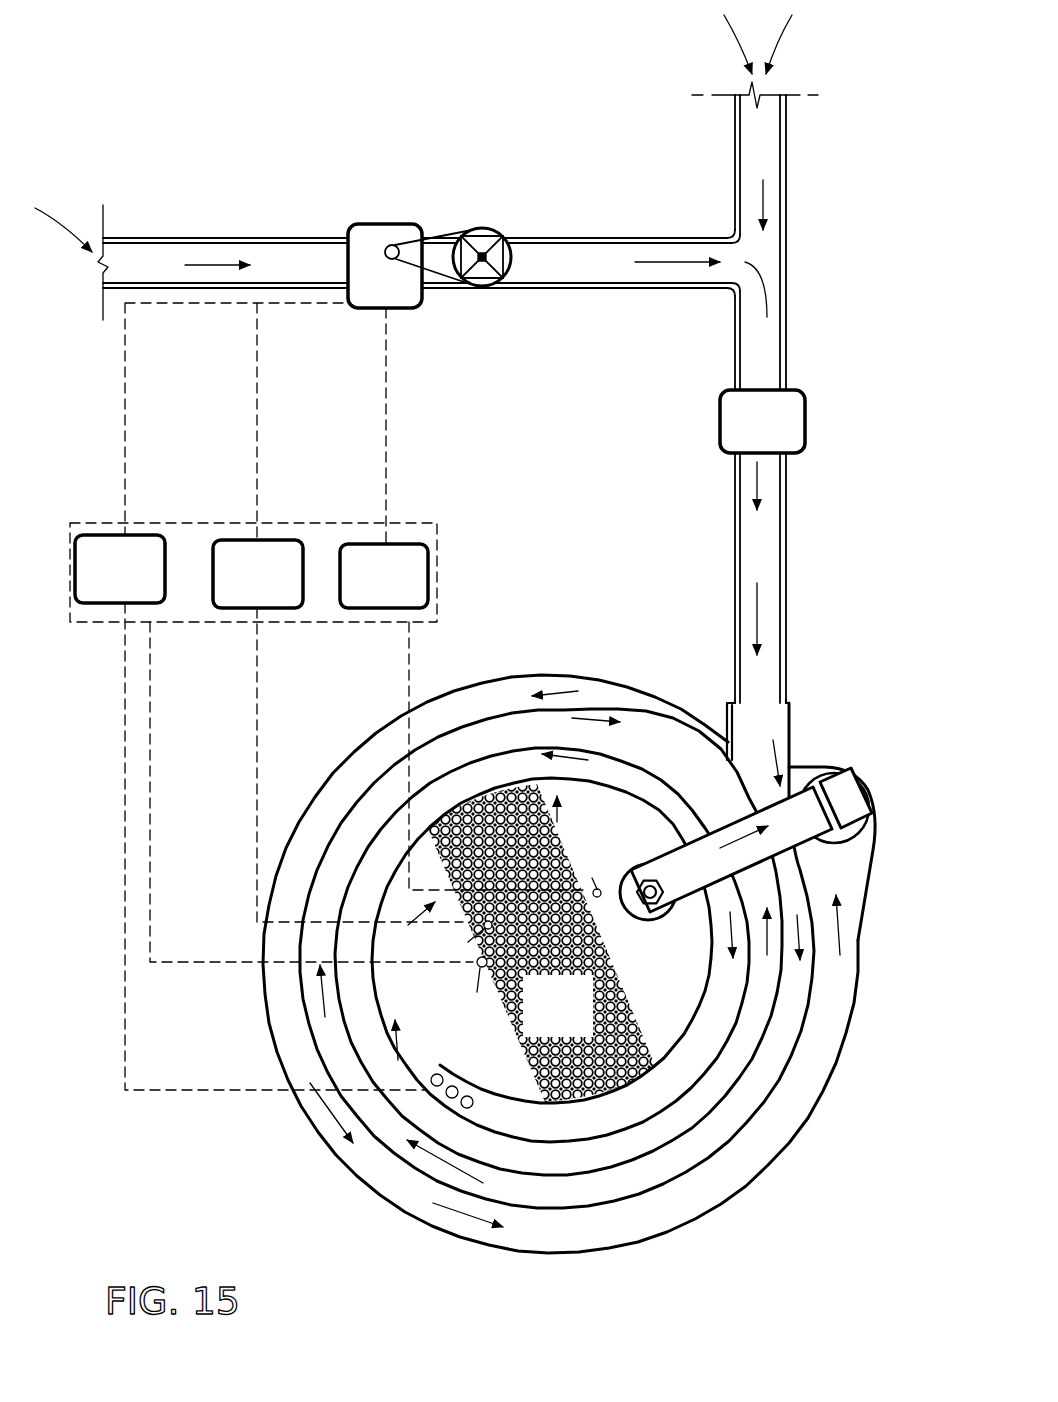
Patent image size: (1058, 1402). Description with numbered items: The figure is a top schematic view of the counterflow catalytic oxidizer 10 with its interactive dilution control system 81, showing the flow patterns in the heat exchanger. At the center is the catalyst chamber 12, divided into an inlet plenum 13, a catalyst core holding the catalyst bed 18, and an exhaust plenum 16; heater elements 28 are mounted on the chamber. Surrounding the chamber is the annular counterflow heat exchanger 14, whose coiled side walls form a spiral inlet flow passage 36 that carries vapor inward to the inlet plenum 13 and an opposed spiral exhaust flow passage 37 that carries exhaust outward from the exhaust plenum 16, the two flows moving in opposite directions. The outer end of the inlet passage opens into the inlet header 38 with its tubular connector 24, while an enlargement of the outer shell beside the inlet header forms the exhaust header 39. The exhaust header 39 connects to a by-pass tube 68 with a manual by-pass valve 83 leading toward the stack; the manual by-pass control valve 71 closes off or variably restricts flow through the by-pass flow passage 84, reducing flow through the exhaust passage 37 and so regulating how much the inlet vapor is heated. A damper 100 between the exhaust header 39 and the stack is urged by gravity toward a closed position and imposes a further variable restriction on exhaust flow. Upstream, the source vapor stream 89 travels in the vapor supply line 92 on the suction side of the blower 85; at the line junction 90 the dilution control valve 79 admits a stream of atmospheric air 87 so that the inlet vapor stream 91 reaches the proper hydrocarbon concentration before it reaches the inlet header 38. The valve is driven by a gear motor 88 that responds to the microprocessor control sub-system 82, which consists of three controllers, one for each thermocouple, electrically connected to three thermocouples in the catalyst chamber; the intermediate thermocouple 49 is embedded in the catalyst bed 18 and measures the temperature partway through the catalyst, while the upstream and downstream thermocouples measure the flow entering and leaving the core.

The counterflow catalytic oxidizer 10 is at (548, 969).
The catalyst chamber 12 is at (663, 981).
The inlet plenum 13 is at (447, 1009).
The annular counterflow heat exchanger 14 is at (272, 1032).
The exhaust plenum 16 is at (605, 808).
The catalyst bed 18 is at (568, 1016).
The tubular connector 24 is at (775, 728).
The heater elements 28 is at (475, 1093).
The inlet flow passage 36 is at (543, 950).
The exhaust flow passage 37 is at (555, 959).
The inlet header 38 is at (767, 772).
The exhaust header 39 is at (840, 882).
The intermediate thermocouple 49 is at (258, 574).
The by-pass tube 68 is at (712, 884).
The manual by-pass control valve 71 is at (645, 905).
The dilution control valve 79 is at (478, 238).
The interactive dilution control system 81 is at (442, 320).
The microprocessor control sub-system 82 is at (327, 696).
The manual by-pass valve 83 is at (637, 858).
The by-pass flow passage 84 is at (790, 878).
The blower 85 is at (802, 392).
The atmospheric air 87 is at (387, 262).
The motor 88 is at (355, 225).
The source vapor stream 89 is at (760, 193).
The line junction 90 is at (772, 258).
The inlet vapor stream 91 is at (760, 578).
The vapor supply line 92 is at (788, 128).
The damper 100 is at (850, 793).